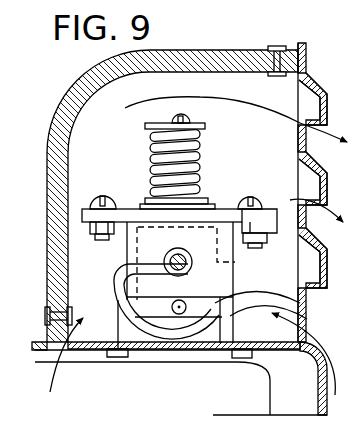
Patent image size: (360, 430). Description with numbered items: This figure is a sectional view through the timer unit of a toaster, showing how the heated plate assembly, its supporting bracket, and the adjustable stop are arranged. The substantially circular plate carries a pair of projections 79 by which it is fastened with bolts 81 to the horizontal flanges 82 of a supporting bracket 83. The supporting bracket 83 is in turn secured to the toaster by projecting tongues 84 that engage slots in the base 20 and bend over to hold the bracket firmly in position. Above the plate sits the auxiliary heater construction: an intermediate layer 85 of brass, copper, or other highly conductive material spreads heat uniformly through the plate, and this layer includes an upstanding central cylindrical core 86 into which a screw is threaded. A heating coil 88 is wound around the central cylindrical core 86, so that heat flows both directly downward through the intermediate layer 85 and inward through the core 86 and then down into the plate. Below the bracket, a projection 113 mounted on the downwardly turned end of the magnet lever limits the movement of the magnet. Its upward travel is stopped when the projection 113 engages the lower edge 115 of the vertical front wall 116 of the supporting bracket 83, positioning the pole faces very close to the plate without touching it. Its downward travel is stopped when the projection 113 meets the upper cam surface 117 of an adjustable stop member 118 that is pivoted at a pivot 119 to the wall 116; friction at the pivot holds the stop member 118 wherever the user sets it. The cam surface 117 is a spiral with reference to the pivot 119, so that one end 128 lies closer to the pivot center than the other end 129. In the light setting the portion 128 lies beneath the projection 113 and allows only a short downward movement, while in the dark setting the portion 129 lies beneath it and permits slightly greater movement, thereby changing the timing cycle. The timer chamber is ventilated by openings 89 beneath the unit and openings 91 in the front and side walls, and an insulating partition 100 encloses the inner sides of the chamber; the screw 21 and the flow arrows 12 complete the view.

The insulating partition 100 is at (92, 84).
The screw 21 is at (304, 64).
The openings 91 is at (312, 92).
The projections 79 is at (264, 222).
The heating coil 88 is at (205, 153).
The upstanding central cylindrical core 86 is at (156, 143).
The intermediate layer 85 is at (213, 208).
The bolts 81 is at (264, 205).
The horizontal flanges 82 is at (268, 233).
The vertical front wall 116 is at (222, 262).
The pivot 119 is at (164, 259).
The end of limiting surface 128 is at (133, 282).
The adjustable stop member 118 is at (126, 302).
The upper cam surface 117 is at (167, 333).
The other end of limiting surface 129 is at (198, 322).
The lower edge 115 is at (303, 300).
The projection 113 is at (303, 312).
The openings 89 is at (93, 348).
The supporting bracket 83 is at (236, 322).
The projecting tongues 84 is at (243, 355).
The base 20 is at (325, 399).
The air flow 12 is at (242, 170).